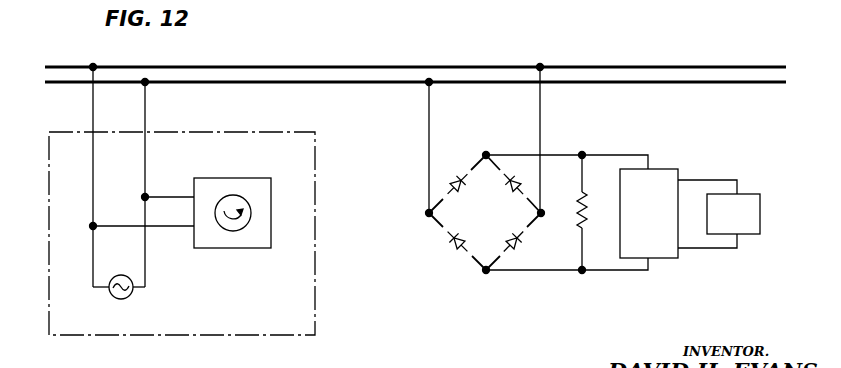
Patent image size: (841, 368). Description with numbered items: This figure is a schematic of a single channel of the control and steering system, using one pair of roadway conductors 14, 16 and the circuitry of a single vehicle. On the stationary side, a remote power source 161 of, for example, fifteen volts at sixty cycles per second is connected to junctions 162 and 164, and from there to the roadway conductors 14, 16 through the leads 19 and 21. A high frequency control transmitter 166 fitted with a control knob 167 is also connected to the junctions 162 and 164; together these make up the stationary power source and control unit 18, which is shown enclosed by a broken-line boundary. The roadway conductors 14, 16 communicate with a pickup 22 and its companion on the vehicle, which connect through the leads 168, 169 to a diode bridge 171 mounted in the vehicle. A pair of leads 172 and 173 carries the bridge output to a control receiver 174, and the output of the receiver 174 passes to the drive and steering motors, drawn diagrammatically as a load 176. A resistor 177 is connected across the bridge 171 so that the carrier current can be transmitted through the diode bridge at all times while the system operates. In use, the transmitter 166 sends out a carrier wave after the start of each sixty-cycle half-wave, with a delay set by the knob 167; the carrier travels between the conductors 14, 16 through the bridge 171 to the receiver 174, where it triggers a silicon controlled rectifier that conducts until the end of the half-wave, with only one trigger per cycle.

The roadway conductor 14 is at (257, 66).
The roadway conductor 16 is at (246, 85).
The stationary power source and control unit 18 is at (214, 336).
The lead 19 is at (92, 110).
The lead 21 is at (148, 110).
The pickup 22 is at (538, 65).
The remote stationary power source 161 is at (122, 300).
The junction 162 is at (92, 225).
The junction 164 is at (148, 196).
The high frequency control transmitter 166 is at (232, 215).
The control knob 167 is at (234, 198).
The lead 168 is at (428, 110).
The lead 169 is at (543, 110).
The diode bridge 171 is at (436, 252).
The lead 172 is at (506, 154).
The lead 173 is at (512, 272).
The control receiver 174 is at (663, 177).
The load 176 is at (746, 200).
The resistor 177 is at (575, 214).